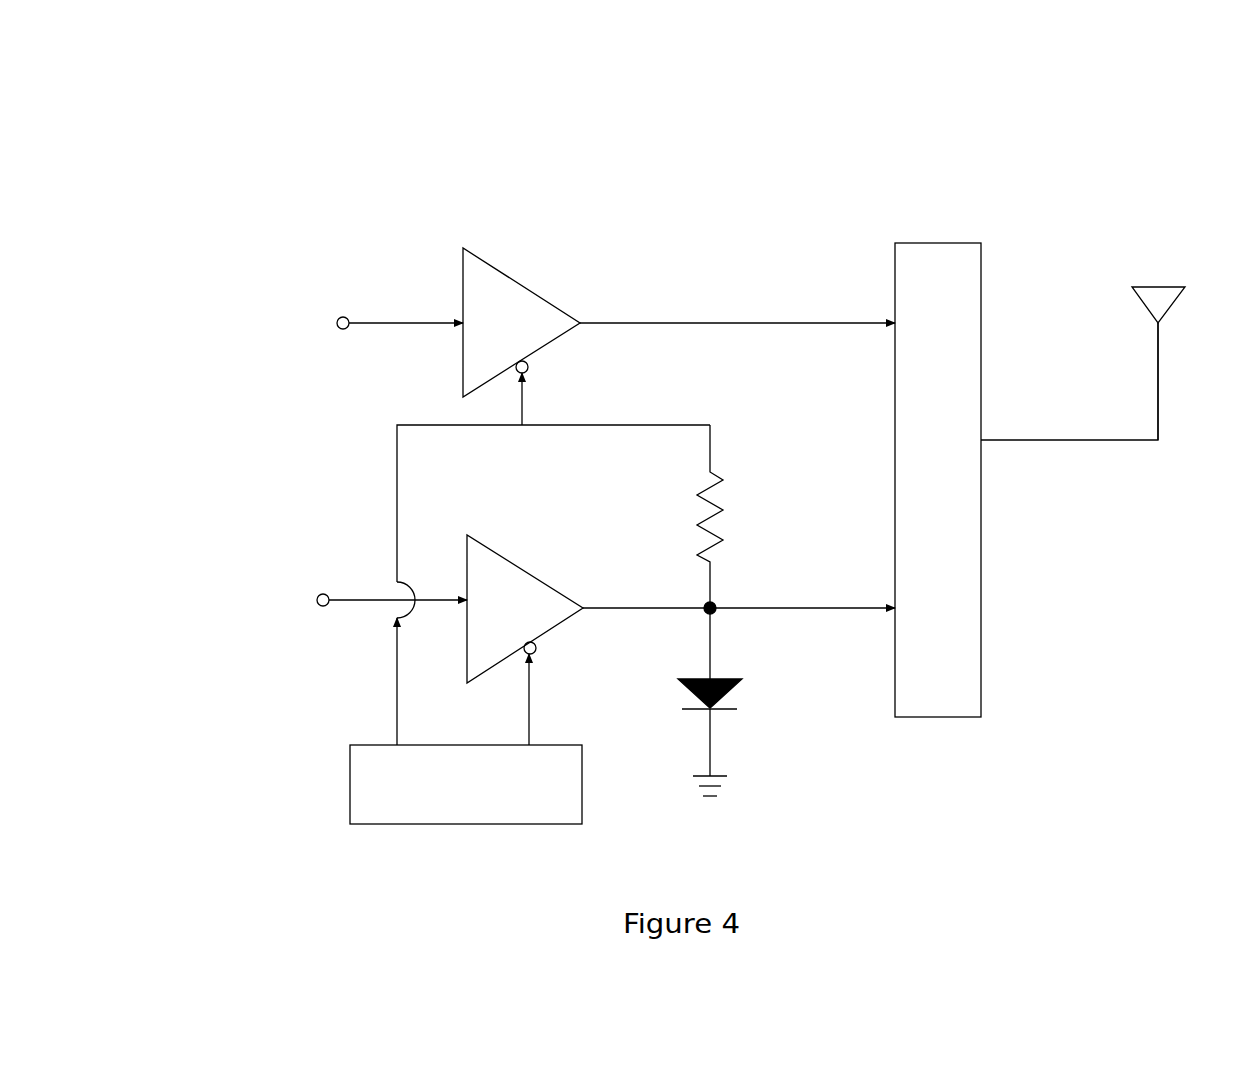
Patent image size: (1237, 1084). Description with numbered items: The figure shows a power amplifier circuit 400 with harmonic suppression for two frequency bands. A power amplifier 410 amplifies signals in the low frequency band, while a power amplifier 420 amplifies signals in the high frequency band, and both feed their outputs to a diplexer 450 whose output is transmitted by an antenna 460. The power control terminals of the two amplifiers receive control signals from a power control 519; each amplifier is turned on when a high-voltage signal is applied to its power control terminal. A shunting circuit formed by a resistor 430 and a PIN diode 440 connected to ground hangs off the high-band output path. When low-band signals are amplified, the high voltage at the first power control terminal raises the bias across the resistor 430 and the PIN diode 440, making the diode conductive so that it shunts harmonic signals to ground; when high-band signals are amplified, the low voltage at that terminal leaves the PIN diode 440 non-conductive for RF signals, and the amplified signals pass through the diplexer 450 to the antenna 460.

The power amplifier circuit 400 is at (921, 148).
The power amplifier 410 is at (528, 313).
The power amplifier 420 is at (524, 594).
The resistor 430 is at (732, 488).
The PIN diode 440 is at (752, 700).
The diplexer 450 is at (965, 313).
The antenna 460 is at (1172, 265).
The power control 519 is at (365, 788).